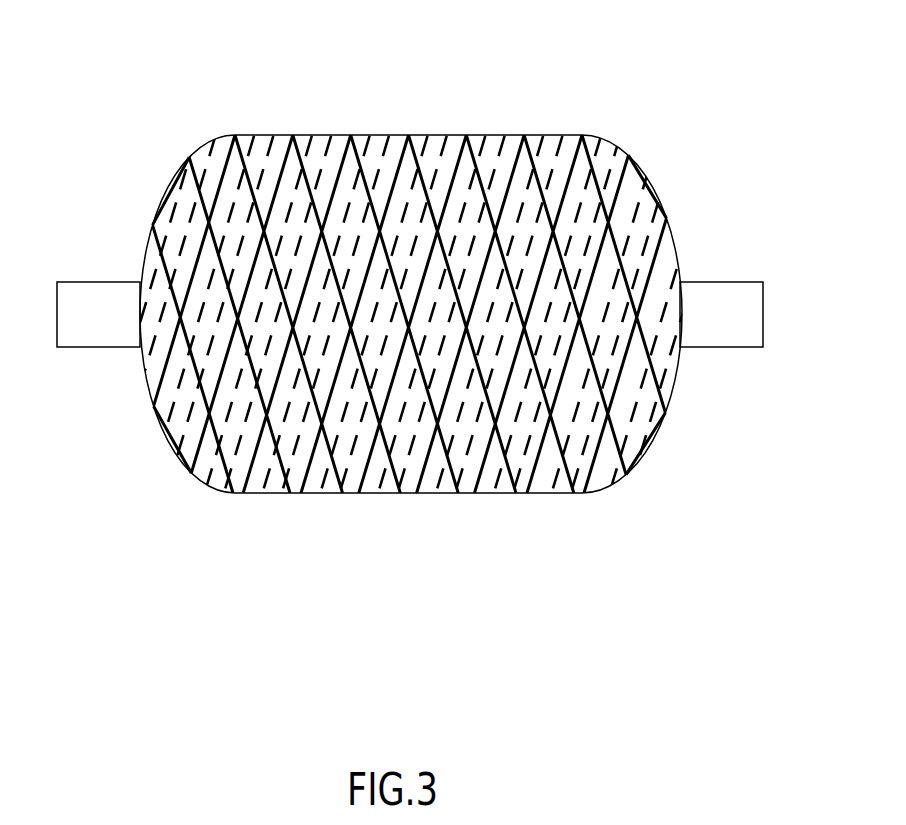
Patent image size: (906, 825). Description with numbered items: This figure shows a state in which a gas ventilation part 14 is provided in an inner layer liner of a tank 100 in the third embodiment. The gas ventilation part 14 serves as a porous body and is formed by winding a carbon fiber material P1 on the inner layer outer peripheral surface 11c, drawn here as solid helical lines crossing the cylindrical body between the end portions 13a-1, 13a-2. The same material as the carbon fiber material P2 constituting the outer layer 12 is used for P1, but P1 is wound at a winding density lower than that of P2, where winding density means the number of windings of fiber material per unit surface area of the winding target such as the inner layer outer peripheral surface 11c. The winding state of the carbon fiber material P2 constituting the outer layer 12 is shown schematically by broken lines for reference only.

The high pressure tank 100 is at (412, 246).
The inner layer outer peripheral surface 11c is at (393, 148).
The outer layer 12 is at (203, 143).
The gas ventilation part 14 is at (297, 147).
The first boss 13a-1 is at (97, 315).
The second boss 13a-2 is at (740, 312).